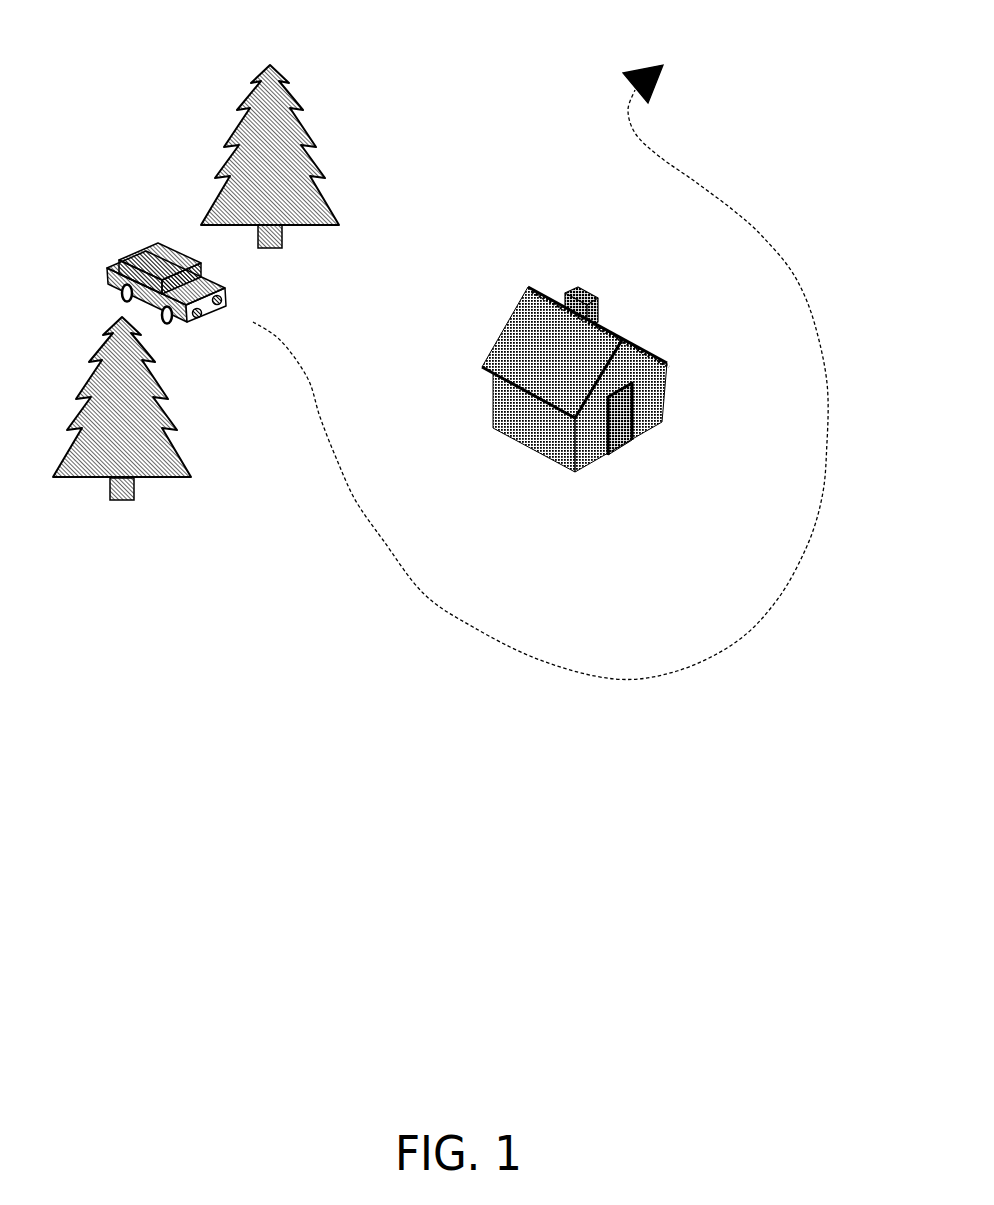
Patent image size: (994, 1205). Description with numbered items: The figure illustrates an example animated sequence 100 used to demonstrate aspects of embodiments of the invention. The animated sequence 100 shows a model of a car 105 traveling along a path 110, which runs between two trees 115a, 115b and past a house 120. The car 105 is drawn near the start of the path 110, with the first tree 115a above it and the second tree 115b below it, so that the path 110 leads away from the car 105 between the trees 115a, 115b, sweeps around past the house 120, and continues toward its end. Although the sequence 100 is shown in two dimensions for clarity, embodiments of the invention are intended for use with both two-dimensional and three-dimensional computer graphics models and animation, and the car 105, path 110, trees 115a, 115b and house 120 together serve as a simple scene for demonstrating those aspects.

The animated sequence 100 is at (440, 419).
The car 105 is at (128, 255).
The path 110 is at (425, 595).
The tree 115a is at (292, 248).
The tree 115b is at (138, 487).
The house 120 is at (608, 472).